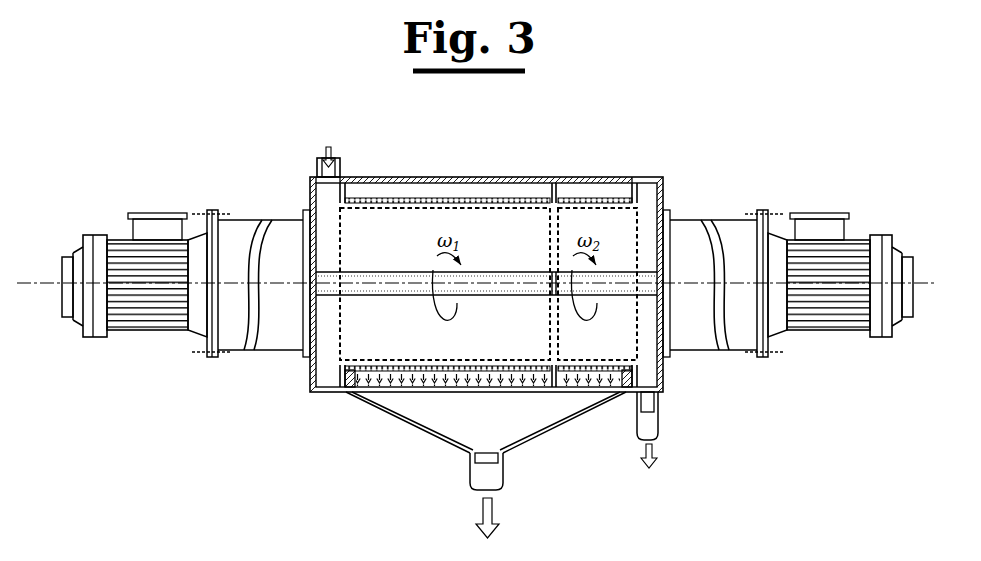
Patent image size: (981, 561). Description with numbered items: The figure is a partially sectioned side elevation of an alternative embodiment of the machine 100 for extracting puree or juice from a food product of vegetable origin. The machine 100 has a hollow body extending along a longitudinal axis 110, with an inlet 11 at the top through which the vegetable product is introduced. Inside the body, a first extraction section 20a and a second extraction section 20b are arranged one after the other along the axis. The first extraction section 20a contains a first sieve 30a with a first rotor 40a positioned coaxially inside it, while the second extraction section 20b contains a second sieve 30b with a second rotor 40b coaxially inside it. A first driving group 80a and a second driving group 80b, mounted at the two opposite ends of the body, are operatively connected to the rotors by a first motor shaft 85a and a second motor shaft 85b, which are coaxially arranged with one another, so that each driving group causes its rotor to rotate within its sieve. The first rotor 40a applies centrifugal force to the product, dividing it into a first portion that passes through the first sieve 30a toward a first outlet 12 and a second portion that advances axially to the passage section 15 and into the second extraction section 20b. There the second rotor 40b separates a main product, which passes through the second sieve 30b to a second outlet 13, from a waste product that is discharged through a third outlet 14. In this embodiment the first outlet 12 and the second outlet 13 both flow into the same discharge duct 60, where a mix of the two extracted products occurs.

The machine 100 is at (798, 107).
The inlet 11 is at (316, 151).
The first outlet 12 is at (414, 398).
The second outlet 13 is at (589, 398).
The third outlet 14 is at (648, 418).
The passage section 15 is at (541, 225).
The first extraction section 20a is at (382, 191).
The second extraction section 20b is at (593, 191).
The first sieve 30a is at (445, 238).
The second sieve 30b is at (580, 192).
The first rotor 40a is at (337, 353).
The second rotor 40b is at (643, 351).
The discharge duct 60 is at (534, 451).
The first driving group 80a is at (102, 208).
The second driving group 80b is at (843, 349).
The first motor shaft 85a is at (333, 264).
The second motor shaft 85b is at (643, 264).
The longitudinal axis 110 is at (28, 282).